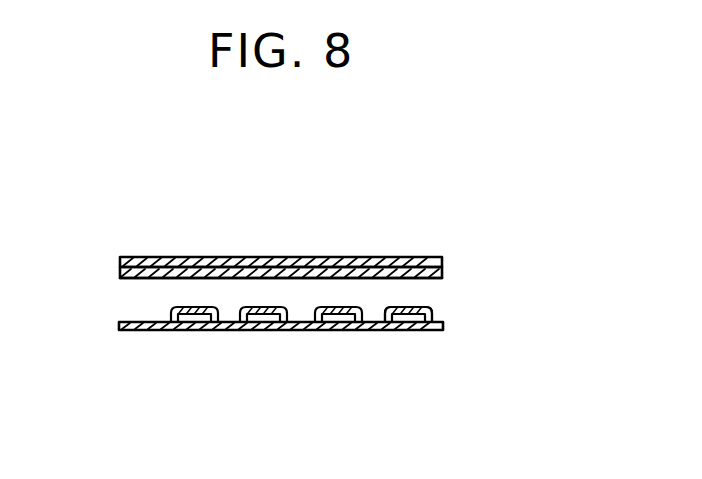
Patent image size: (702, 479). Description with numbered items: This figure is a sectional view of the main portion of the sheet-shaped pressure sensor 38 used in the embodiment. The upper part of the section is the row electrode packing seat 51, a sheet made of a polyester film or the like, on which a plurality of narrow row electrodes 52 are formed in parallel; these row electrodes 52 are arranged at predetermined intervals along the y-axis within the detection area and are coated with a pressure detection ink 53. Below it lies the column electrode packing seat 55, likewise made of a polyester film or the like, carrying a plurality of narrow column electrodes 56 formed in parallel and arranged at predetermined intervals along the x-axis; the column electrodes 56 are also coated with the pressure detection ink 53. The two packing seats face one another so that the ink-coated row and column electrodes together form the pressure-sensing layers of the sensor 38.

The sheet-shaped pressure sensor 38 is at (372, 228).
The row electrode packing seat 51 is at (420, 257).
The row electrodes 52 is at (442, 268).
The pressure detection ink 53 is at (137, 281).
The column electrode packing seat 55 is at (223, 330).
The column electrodes 56 is at (400, 330).